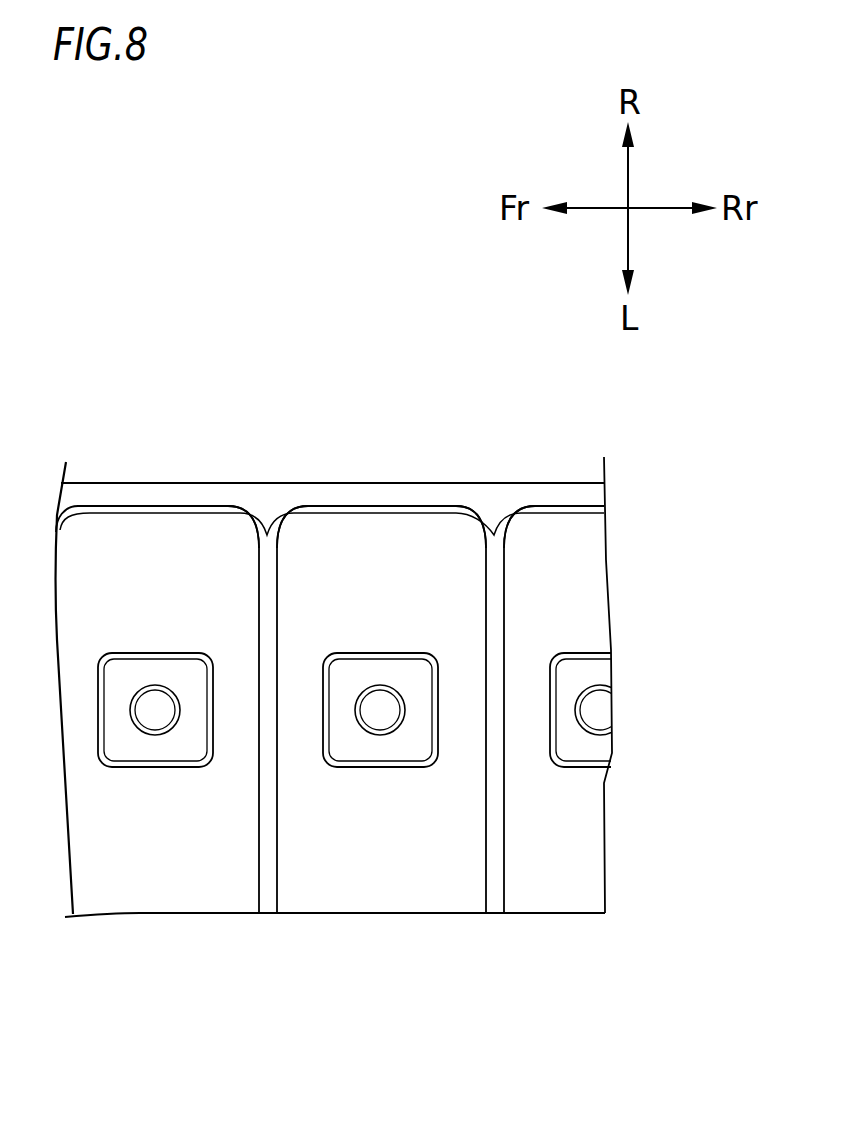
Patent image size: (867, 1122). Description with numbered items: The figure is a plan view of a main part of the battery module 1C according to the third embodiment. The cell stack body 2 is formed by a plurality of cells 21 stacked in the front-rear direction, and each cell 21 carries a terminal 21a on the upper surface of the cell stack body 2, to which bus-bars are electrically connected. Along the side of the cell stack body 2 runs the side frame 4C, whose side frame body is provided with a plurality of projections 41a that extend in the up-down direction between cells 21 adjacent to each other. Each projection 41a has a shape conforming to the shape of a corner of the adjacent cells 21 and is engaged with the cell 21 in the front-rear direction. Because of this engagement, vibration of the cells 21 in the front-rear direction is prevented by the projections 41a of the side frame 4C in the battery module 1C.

The side frame 4C is at (137, 483).
The projection 41a is at (267, 530).
The battery module 1C is at (684, 591).
The cell stack body 2 is at (558, 889).
The cell 21 is at (322, 888).
The terminal 21a is at (150, 745).